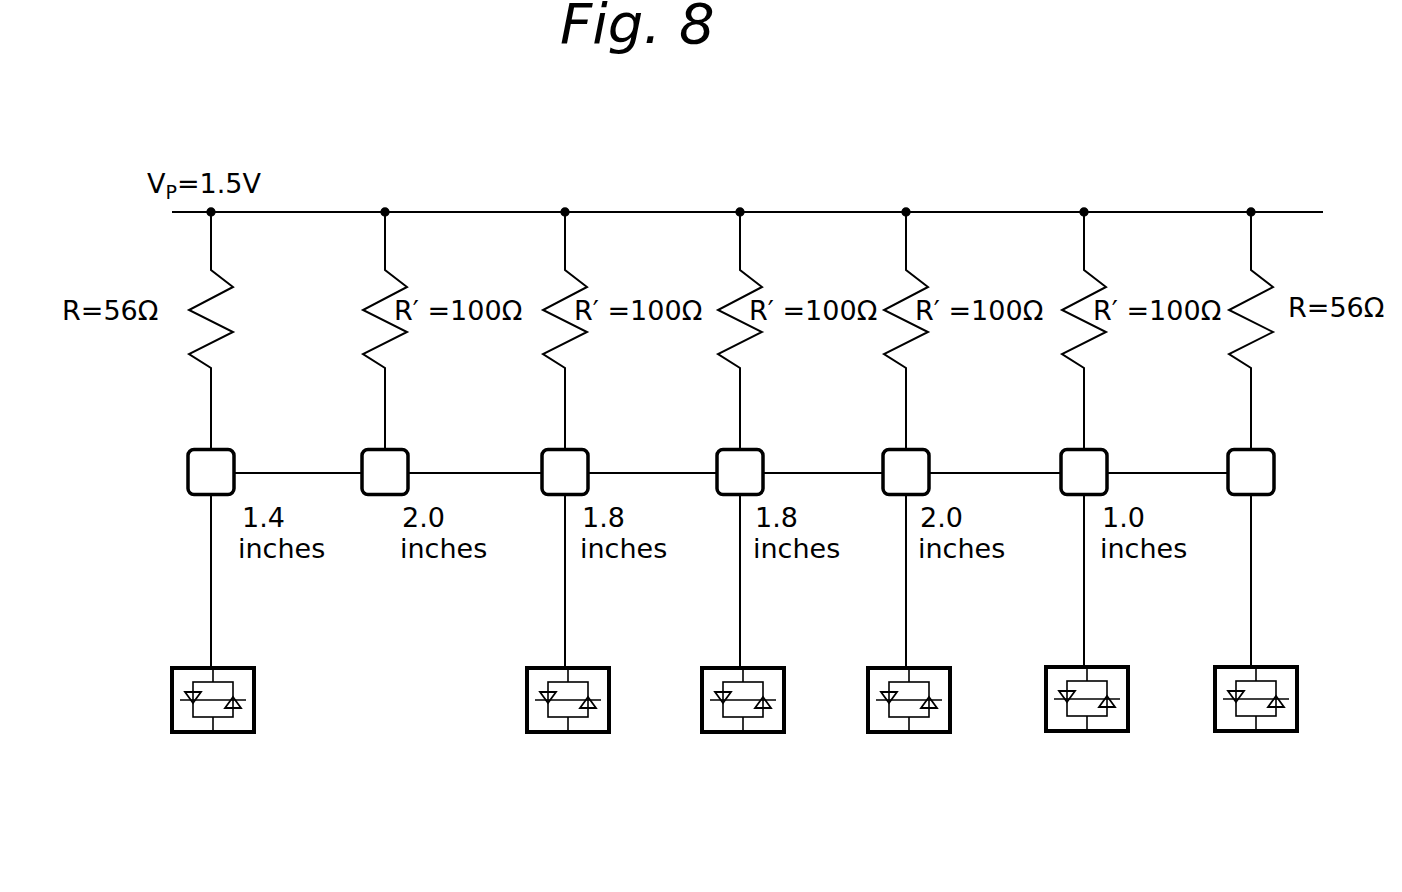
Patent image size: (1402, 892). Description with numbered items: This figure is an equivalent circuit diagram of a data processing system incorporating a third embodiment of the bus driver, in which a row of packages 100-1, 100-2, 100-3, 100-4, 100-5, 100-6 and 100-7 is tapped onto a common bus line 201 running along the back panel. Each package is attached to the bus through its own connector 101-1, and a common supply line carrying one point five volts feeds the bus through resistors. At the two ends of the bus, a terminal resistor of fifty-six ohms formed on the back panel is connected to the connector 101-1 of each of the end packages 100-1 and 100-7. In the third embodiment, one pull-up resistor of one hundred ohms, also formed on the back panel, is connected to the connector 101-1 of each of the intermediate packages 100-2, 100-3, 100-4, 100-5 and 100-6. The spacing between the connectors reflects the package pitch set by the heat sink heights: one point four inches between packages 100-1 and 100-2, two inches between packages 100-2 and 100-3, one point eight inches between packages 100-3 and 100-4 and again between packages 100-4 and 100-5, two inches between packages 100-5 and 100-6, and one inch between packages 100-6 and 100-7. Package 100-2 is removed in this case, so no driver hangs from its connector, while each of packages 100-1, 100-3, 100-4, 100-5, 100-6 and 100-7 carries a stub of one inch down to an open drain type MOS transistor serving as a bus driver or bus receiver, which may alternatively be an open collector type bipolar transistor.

The connector 101-1 is at (363, 454).
The transmission line segment 201 is at (450, 472).
The package 100-1 is at (207, 722).
The package 100-2 is at (388, 759).
The package 100-3 is at (558, 722).
The package 100-4 is at (737, 722).
The package 100-5 is at (895, 722).
The package 100-6 is at (1081, 719).
The package 100-7 is at (1254, 719).